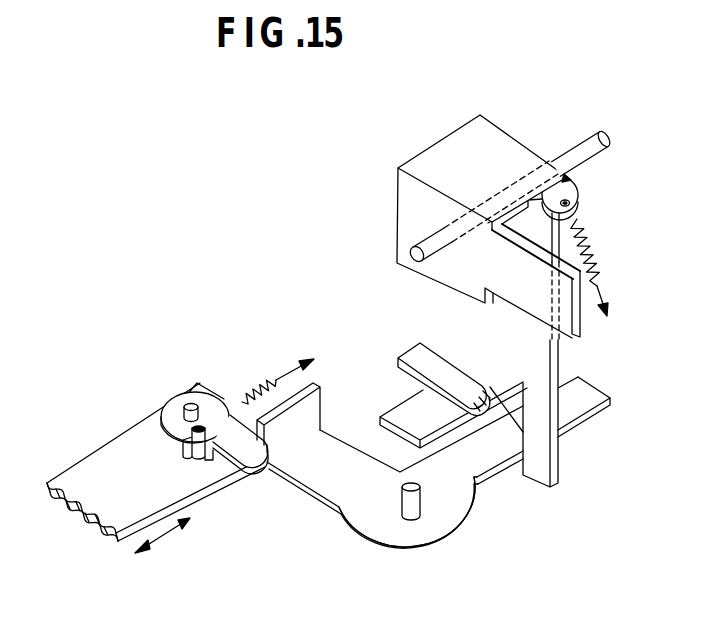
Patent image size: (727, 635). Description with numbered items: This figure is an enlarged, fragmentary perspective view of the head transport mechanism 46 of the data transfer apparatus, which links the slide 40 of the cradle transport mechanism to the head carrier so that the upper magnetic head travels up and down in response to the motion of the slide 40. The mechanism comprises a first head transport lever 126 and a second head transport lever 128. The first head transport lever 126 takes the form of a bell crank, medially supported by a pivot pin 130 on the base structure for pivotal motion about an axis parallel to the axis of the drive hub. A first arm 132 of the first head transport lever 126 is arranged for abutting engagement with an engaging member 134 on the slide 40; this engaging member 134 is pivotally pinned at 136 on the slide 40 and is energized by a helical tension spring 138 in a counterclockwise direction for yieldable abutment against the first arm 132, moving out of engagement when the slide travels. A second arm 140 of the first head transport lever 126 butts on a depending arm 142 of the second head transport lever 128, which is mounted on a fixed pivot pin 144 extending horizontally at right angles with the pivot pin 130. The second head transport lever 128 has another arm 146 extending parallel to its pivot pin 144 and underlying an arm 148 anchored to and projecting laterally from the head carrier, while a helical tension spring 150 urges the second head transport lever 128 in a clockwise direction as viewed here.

The slide 40 is at (100, 458).
The head transport mechanism 46 is at (328, 198).
The first head transport lever 126 is at (463, 518).
The second head transport lever 128 is at (441, 137).
The pivot pin 130 is at (409, 514).
The first arm 132 is at (345, 494).
The engaging member 134 is at (243, 452).
The pivot pin of engaging member 136 is at (188, 404).
The helical tension spring 138 is at (267, 374).
The second arm 140 is at (587, 420).
The depending arm 142 is at (537, 472).
The fixed pivot pin 144 is at (612, 148).
The arm 146 is at (478, 364).
The arm 148 is at (413, 357).
The helical tension spring 150 is at (594, 246).